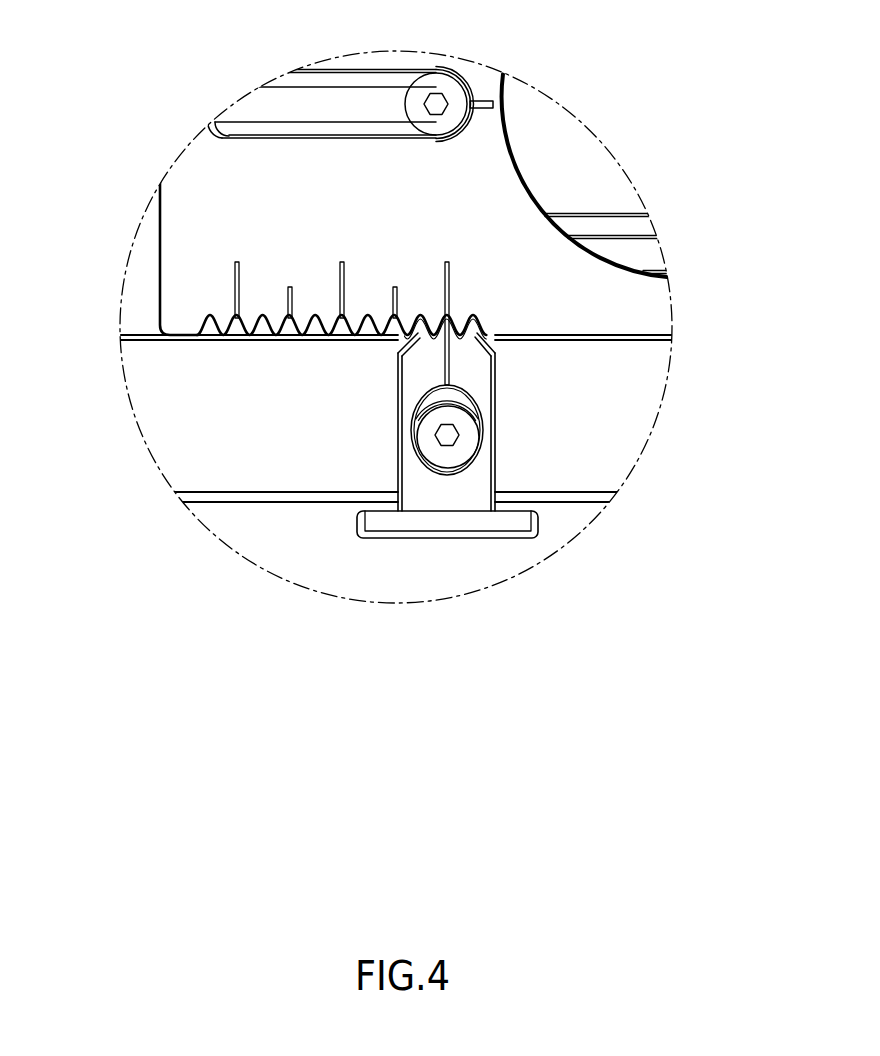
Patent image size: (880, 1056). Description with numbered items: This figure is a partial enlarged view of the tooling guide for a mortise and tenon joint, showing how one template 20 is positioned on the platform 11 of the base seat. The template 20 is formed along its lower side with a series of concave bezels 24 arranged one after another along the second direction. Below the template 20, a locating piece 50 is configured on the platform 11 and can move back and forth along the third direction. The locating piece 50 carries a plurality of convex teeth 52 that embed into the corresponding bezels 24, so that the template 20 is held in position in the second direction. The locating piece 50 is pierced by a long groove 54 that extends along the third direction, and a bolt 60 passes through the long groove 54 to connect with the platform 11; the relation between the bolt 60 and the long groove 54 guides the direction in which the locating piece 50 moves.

The platform 11 is at (248, 502).
The template 20 is at (160, 259).
The concave bezel 24 is at (474, 340).
The locating piece 50 is at (448, 538).
The convex tooth 52 is at (487, 327).
The long groove 54 is at (472, 404).
The bolt 60 is at (477, 452).